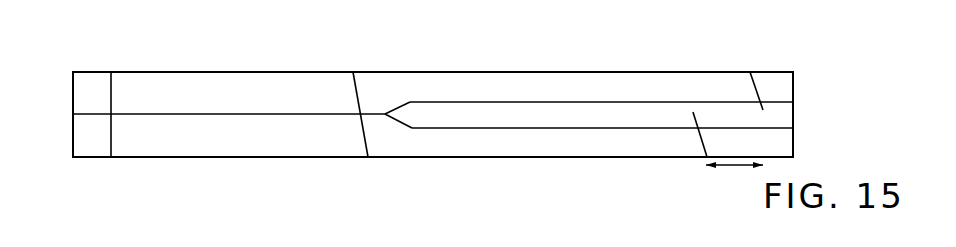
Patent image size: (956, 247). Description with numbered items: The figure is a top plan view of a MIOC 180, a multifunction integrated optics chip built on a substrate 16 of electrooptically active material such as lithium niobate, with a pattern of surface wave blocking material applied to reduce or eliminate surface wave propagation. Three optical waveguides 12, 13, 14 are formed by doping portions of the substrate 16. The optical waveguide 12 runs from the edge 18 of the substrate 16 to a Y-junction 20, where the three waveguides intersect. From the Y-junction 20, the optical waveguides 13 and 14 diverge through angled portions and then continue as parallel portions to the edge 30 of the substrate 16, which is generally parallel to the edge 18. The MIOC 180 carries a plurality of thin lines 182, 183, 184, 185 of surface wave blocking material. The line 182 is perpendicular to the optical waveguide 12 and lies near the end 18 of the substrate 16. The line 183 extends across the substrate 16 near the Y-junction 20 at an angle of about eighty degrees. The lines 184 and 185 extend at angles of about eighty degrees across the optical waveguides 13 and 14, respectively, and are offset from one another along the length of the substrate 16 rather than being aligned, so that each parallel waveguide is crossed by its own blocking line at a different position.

The optical waveguide 12 is at (188, 115).
The optical waveguide 13 is at (488, 128).
The optical waveguide 14 is at (432, 102).
The substrate 16 is at (267, 158).
The edge 18 is at (72, 97).
The Y-junction 20 is at (382, 128).
The edge 30 is at (793, 85).
The MIOC 180 is at (628, 170).
The line 182 is at (110, 84).
The line 183 is at (355, 90).
The line 184 is at (702, 123).
The line 185 is at (758, 85).